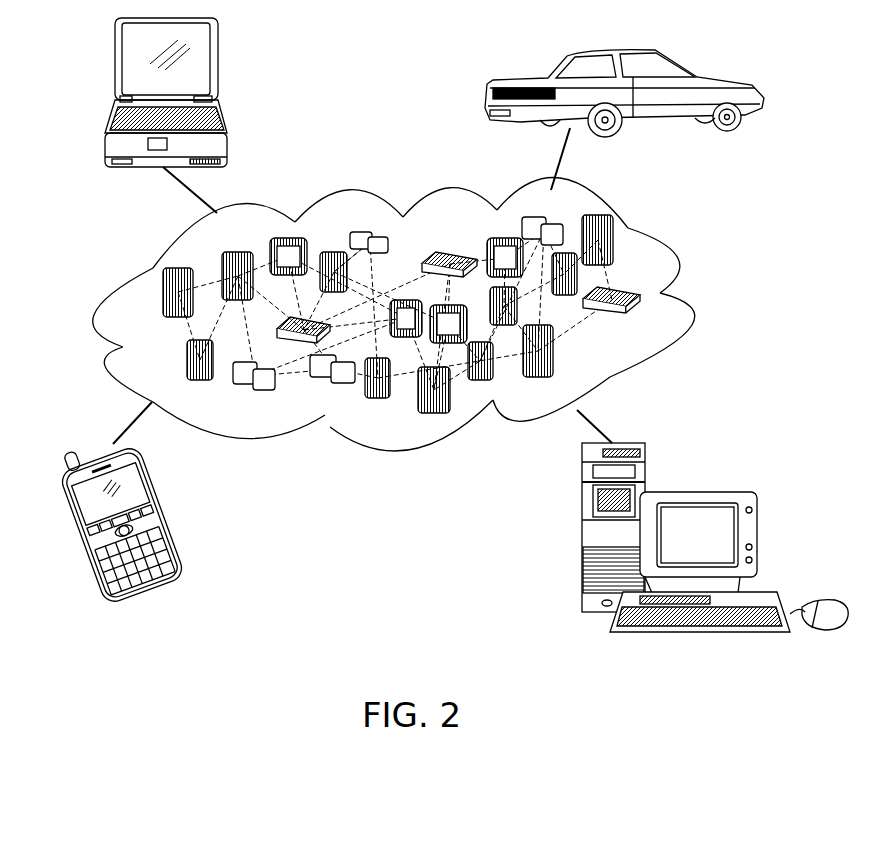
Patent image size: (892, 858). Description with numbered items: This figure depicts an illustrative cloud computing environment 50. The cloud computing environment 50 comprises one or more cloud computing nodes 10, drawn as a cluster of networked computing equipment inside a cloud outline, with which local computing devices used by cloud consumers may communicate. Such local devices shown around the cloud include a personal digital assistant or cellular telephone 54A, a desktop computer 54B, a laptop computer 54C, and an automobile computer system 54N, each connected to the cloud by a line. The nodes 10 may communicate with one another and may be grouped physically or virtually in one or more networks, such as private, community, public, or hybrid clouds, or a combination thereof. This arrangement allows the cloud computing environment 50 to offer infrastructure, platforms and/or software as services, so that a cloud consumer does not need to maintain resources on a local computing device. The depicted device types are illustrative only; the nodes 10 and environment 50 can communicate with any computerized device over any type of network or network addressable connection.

The cloud computing node 10 is at (648, 333).
The cloud computing environment 50 is at (668, 244).
The personal digital assistant or cellular telephone 54A is at (80, 528).
The desktop computer 54B is at (700, 492).
The laptop computer 54C is at (116, 66).
The automobile computer system 54N is at (683, 66).